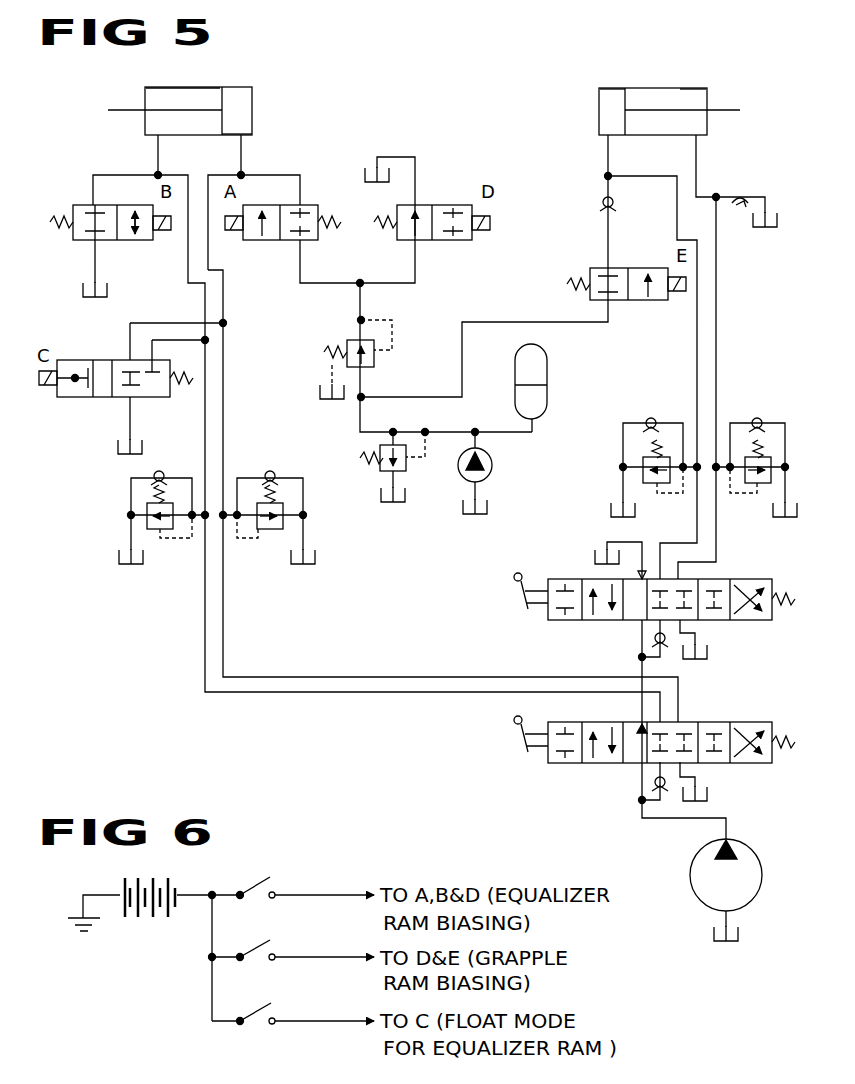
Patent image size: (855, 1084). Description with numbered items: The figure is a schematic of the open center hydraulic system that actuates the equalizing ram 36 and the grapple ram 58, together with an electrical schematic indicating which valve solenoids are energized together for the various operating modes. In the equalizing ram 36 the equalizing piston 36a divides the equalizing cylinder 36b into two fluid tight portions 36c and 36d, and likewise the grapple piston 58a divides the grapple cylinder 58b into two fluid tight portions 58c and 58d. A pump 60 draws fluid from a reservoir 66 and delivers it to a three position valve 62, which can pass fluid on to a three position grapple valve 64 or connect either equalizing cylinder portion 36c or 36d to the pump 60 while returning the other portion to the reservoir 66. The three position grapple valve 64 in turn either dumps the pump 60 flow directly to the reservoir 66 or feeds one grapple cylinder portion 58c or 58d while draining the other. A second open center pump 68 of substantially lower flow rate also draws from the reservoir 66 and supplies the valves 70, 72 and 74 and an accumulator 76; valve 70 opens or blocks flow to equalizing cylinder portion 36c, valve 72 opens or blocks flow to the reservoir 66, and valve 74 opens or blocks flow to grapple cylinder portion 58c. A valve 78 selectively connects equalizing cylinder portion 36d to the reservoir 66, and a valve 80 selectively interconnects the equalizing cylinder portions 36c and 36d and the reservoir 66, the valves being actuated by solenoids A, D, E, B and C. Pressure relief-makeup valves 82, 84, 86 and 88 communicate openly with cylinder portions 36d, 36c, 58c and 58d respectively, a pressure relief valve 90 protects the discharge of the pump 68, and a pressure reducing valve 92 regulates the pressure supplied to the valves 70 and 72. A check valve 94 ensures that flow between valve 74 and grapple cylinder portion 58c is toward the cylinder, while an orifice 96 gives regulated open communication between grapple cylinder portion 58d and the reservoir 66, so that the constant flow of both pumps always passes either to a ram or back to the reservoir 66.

The equalizing ram 36 is at (196, 82).
The equalizing piston 36a is at (250, 97).
The equalizing cylinder 36b is at (254, 125).
The equalizing cylinder portion 36c is at (240, 110).
The equalizing cylinder portion 36d is at (172, 90).
The grapple ram 58 is at (657, 86).
The grapple piston 58a is at (605, 95).
The grapple cylinder 58b is at (708, 95).
The grapple cylinder portion 58c is at (600, 108).
The grapple cylinder portion 58d is at (700, 122).
The pump 60 is at (760, 863).
The three position valve 62 is at (725, 722).
The three position grapple valve 64 is at (740, 580).
The reservoir 66 is at (370, 183).
The pump 68 is at (492, 465).
The valve 70 is at (288, 242).
The valve 72 is at (440, 242).
The valve 74 is at (588, 298).
The accumulator 76 is at (548, 382).
The valve 78 is at (82, 205).
The valve 80 is at (85, 397).
The pressure relief-makeup valve 82 is at (160, 530).
The pressure relief-makeup valve 84 is at (270, 530).
The pressure relief-makeup valve 86 is at (672, 455).
The pressure relief-makeup valve 88 is at (755, 455).
The pressure relief valve 90 is at (380, 455).
The pressure reducing valve 92 is at (347, 340).
The check valve 94 is at (600, 207).
The orifice 96 is at (740, 195).